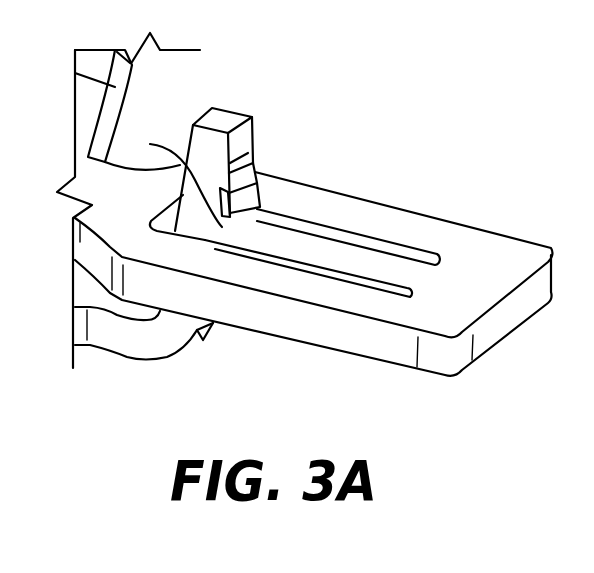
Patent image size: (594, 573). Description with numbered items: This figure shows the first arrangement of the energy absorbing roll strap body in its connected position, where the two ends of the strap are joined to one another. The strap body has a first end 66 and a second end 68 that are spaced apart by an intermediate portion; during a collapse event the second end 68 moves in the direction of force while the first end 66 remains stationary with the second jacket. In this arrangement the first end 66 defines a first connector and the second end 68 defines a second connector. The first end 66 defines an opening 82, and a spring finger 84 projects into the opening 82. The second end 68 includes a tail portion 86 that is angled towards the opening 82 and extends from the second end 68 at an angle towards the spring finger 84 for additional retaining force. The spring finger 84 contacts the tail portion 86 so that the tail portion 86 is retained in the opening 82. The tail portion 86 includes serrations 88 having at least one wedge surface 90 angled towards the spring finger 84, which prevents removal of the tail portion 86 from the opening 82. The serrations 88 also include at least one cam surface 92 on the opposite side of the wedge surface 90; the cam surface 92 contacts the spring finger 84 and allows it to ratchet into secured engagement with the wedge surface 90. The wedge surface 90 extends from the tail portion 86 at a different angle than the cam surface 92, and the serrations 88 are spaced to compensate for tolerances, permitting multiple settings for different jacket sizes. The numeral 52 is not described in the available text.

The mounting bracket 52 is at (468, 109).
The first end 66 is at (525, 257).
The second end 68 is at (122, 342).
The opening 82 is at (302, 226).
The spring finger 84 is at (343, 250).
The tail portion 86 is at (229, 120).
The serrations 88 is at (222, 187).
The wedge surface 90 is at (249, 165).
The cam surface 92 is at (224, 192).